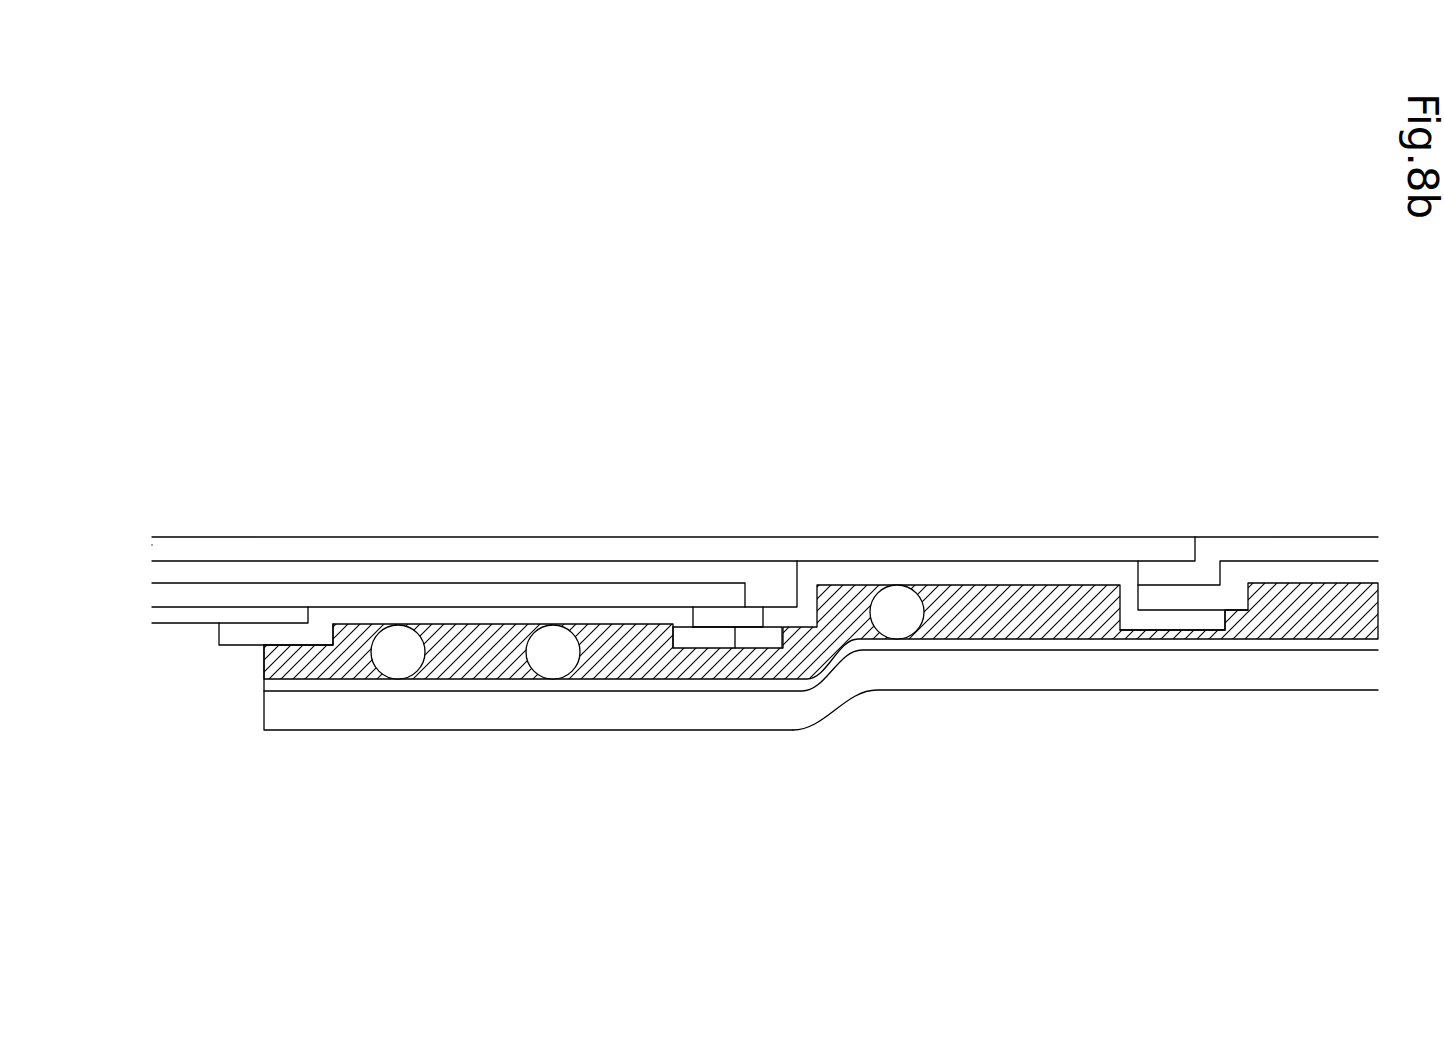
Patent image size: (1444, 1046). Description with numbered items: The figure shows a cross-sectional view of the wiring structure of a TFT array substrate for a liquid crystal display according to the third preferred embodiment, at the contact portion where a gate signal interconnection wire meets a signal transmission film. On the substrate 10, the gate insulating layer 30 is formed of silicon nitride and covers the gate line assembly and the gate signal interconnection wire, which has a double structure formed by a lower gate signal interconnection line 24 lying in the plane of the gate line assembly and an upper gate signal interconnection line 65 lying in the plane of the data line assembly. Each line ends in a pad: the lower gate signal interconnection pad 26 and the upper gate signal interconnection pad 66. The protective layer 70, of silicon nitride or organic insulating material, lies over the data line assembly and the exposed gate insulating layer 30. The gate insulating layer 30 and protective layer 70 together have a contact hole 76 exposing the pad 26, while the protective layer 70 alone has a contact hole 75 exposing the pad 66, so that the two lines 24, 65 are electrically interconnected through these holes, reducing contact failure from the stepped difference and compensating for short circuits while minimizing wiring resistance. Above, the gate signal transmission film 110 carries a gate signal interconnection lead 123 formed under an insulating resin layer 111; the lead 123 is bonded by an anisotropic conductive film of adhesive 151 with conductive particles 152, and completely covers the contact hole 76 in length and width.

The substrate 10 is at (827, 455).
The gate signal interconnection line 24 is at (432, 546).
The gate signal interconnection pad 26 is at (985, 546).
The gate insulating layer 30 is at (335, 572).
The gate signal interconnection line 65 is at (180, 592).
The gate signal interconnection pad 66 is at (545, 590).
The protective layer 70 is at (195, 617).
The contact hole 75 is at (585, 621).
The contact hole 76 is at (1090, 596).
The gate signal transmission film 110 is at (1108, 690).
The insulating resin layer 111 is at (1020, 688).
The gate signal interconnection lead 123 is at (713, 687).
The adhesive 151 is at (472, 680).
The conductive particle 152 is at (547, 663).